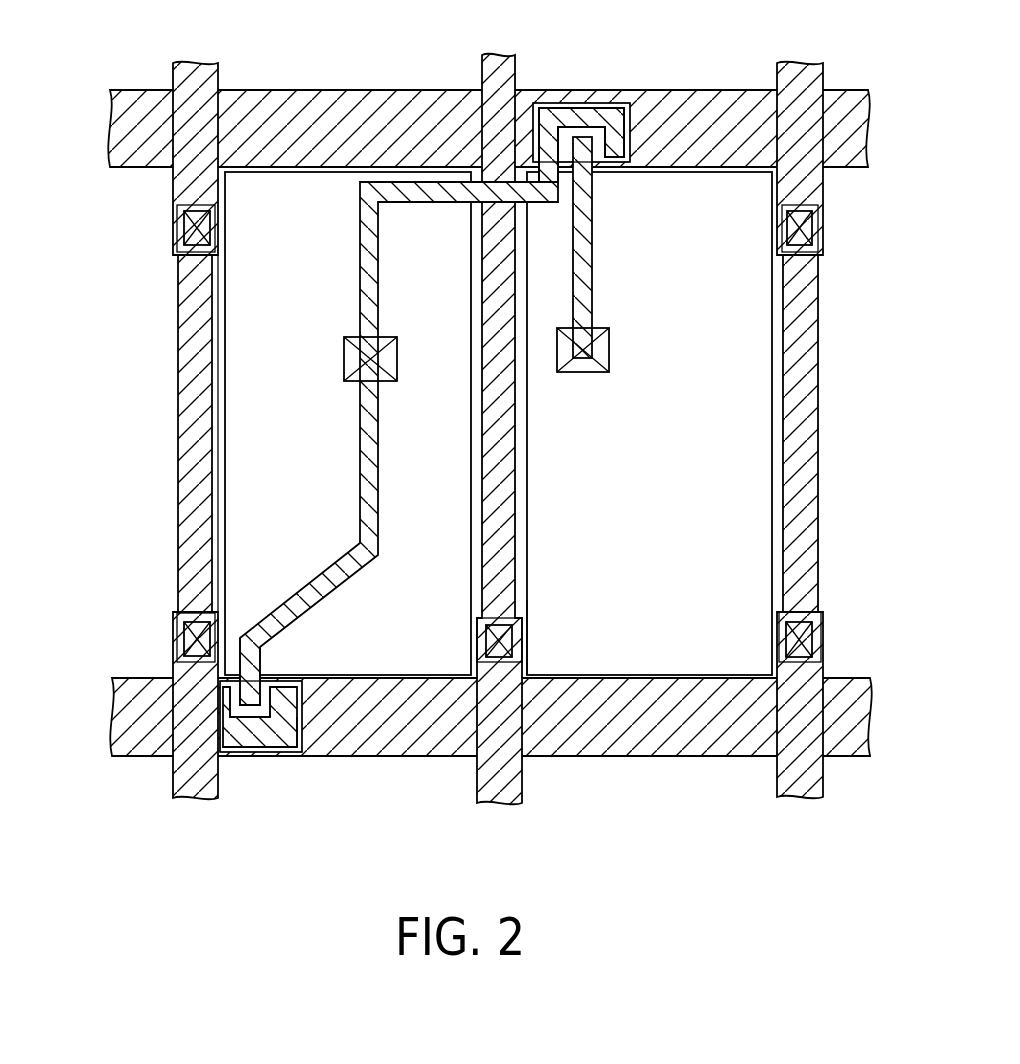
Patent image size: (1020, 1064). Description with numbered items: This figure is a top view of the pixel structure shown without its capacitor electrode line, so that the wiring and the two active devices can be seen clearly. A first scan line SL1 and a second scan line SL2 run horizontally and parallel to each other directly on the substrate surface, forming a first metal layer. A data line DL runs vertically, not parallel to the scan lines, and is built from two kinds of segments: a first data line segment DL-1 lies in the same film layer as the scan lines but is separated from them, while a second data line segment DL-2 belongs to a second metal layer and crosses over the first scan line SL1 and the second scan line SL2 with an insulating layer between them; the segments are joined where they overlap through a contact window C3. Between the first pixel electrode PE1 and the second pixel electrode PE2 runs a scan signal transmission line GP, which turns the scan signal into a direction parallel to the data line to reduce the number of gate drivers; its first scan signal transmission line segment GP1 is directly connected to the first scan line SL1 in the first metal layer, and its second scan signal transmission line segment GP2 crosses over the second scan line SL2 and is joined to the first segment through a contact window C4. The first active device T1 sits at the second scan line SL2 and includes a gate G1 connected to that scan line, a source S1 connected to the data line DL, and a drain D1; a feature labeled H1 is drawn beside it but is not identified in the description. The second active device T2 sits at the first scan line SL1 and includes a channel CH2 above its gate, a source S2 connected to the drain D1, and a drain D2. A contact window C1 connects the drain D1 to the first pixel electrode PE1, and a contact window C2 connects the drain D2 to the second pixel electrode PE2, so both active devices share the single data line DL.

The first scan line SL1 is at (120, 137).
The second scan line SL2 is at (118, 708).
The data line DL is at (442, 431).
The first data line segment DL-1 is at (102, 332).
The second data line segment DL-2 is at (178, 193).
The scan signal transmission line GP is at (569, 429).
The first scan signal transmission line segment GP1 is at (510, 428).
The second scan signal transmission line segment GP2 is at (530, 673).
The first pixel electrode PE1 is at (387, 676).
The second pixel electrode PE2 is at (707, 676).
The first active device T1 is at (277, 742).
The source S1 is at (232, 738).
The gate G1 is at (603, 108).
The opening of first transistor H1 is at (285, 748).
The drain D1 is at (252, 697).
The second active device T2 is at (599, 97).
The source S2 is at (545, 113).
The channel CH2 is at (582, 87).
The drain D2 is at (584, 148).
The contact window C1 is at (398, 360).
The contact window C2 is at (610, 350).
The contact window C3 is at (210, 228).
The contact window C4 is at (493, 640).